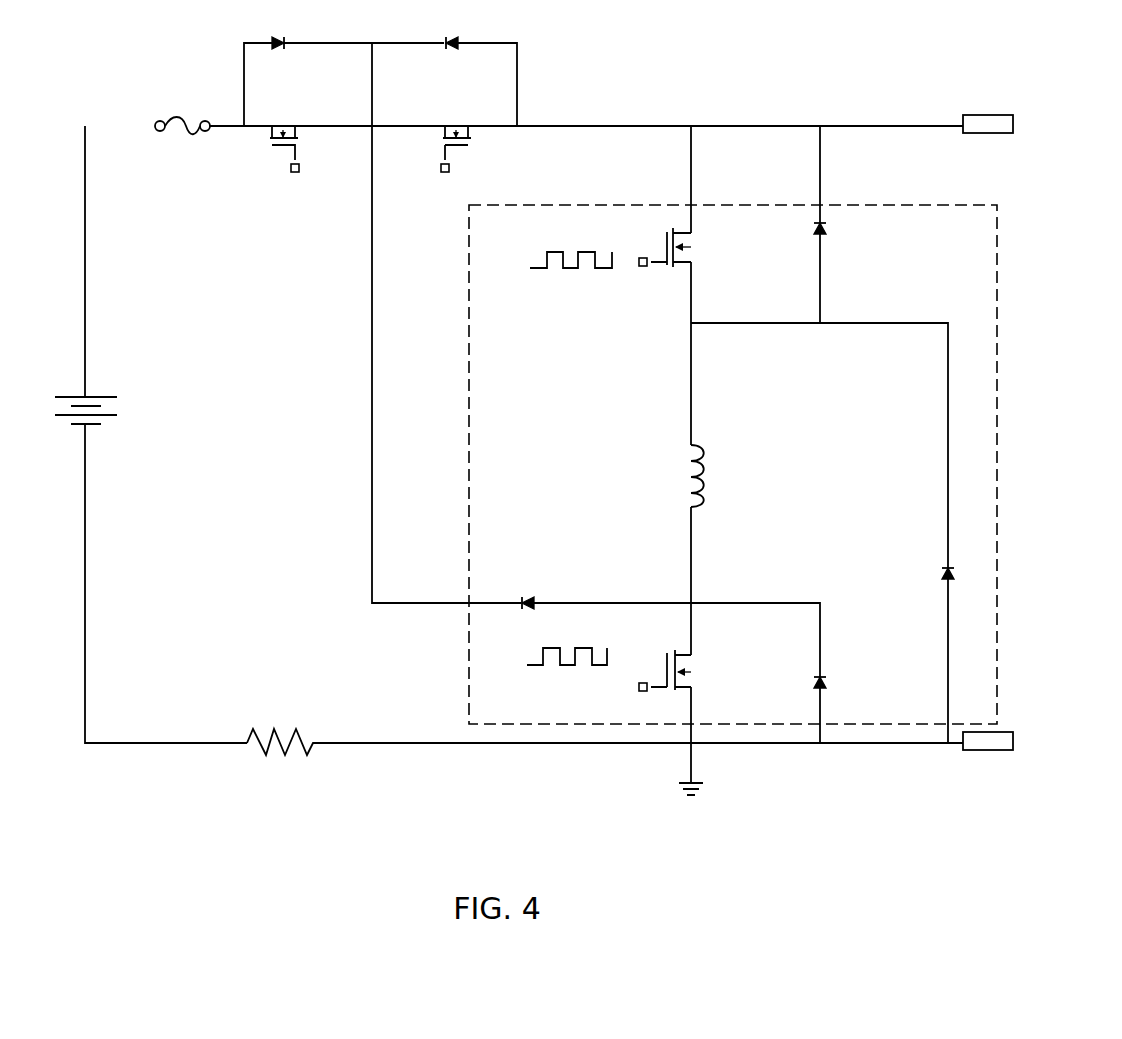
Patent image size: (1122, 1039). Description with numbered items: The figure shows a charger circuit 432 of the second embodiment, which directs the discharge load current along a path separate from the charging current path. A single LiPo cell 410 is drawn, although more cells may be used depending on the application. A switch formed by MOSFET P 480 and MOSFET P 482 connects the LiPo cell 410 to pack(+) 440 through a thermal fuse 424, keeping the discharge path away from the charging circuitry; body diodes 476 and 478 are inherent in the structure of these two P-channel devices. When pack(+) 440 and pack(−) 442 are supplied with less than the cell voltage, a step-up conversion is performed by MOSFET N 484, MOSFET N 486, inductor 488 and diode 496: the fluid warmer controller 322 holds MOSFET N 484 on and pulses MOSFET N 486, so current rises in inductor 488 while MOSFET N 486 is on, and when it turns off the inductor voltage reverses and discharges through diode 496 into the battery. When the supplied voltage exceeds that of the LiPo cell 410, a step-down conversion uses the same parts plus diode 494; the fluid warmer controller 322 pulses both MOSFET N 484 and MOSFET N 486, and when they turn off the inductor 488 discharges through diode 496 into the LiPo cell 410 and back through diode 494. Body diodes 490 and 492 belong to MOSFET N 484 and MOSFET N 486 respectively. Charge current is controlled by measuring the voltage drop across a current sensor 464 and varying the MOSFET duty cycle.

The fluid warmer controller 322 is at (570, 484).
The LiPo cell 410 is at (117, 412).
The thermal fuse 424 is at (174, 109).
The charger circuit 432 is at (765, 464).
The pack(+) 440 is at (1023, 124).
The pack(−) 442 is at (1024, 741).
The current sensor 464 is at (274, 753).
The body diode 476 is at (303, 46).
The body diode 478 is at (445, 46).
The MOSFET P 480 is at (296, 133).
The MOSFET P 482 is at (459, 133).
The MOSFET N 484 is at (702, 245).
The MOSFET N 486 is at (702, 667).
The inductor 488 is at (739, 476).
The body diode 490 is at (872, 248).
The body diode 492 is at (865, 660).
The diode 494 is at (915, 561).
The diode 496 is at (545, 586).